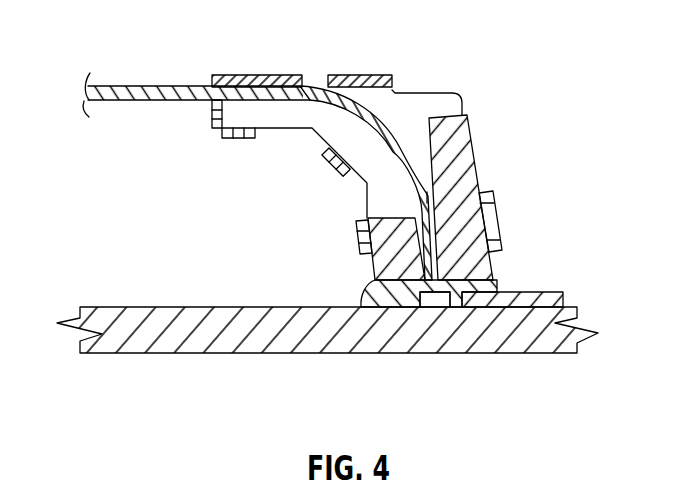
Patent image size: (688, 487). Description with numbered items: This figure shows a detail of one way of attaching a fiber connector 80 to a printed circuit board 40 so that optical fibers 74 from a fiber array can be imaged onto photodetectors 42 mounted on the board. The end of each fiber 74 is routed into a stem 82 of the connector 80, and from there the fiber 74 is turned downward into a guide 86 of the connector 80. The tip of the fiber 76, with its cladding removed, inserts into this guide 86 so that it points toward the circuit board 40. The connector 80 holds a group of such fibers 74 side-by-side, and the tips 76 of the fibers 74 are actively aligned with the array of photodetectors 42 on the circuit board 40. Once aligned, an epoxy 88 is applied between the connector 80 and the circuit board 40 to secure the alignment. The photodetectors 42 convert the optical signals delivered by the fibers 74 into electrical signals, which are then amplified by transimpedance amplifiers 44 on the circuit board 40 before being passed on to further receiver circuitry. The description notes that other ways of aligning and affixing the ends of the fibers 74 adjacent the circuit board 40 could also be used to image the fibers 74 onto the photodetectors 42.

The printed circuit board 40 is at (277, 355).
The photodetectors 42 is at (437, 310).
The transimpedance amplifiers 44 is at (537, 310).
The fibers 74 is at (150, 86).
The tip of the fiber 76 is at (420, 240).
The connector 80 is at (512, 68).
The stem 82 is at (360, 75).
The guide 86 is at (480, 193).
The epoxy 88 is at (496, 282).